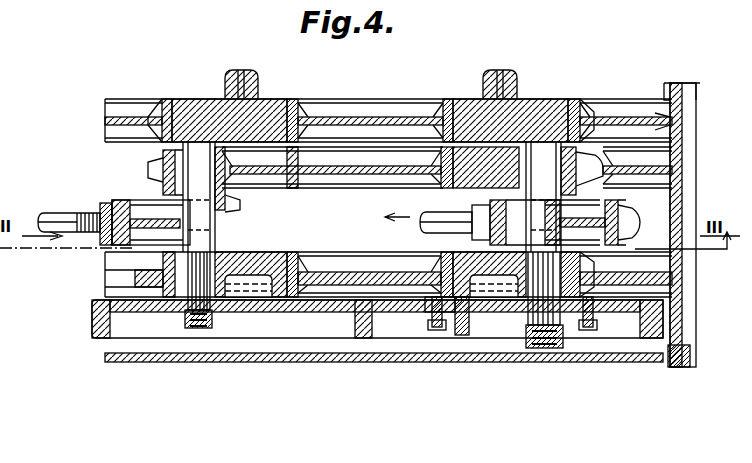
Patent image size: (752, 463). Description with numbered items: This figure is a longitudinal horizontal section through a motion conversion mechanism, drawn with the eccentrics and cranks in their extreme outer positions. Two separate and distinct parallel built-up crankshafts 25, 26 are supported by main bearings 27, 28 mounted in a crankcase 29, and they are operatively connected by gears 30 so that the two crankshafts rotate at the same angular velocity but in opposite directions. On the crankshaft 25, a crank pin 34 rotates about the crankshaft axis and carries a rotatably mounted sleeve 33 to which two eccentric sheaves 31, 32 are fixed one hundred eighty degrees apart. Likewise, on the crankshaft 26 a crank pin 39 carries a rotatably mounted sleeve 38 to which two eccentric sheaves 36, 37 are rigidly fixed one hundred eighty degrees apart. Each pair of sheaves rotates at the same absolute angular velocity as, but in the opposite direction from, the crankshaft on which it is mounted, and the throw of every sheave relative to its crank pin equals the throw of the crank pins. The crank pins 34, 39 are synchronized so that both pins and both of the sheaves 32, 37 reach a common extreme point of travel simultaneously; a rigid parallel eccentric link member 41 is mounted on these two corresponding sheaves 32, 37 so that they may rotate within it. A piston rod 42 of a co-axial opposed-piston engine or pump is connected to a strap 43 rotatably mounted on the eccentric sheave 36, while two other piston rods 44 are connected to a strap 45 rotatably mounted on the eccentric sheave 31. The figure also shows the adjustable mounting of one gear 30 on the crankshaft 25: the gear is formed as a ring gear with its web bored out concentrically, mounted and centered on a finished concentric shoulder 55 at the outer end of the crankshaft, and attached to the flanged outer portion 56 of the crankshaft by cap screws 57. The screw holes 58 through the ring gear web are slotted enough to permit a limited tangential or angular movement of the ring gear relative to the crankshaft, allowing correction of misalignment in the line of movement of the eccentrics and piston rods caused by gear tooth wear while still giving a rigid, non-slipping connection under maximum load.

The crankshaft 25 is at (538, 99).
The crankshaft 26 is at (272, 110).
The main bearing 27 is at (586, 99).
The main bearing 28 is at (170, 99).
The crankcase 29 is at (366, 99).
The gear 30 is at (92, 317).
The eccentric sheave 31 is at (608, 226).
The eccentric sheave 32 is at (478, 138).
The sleeve 33 is at (565, 208).
The crank pin 34 is at (580, 165).
The eccentric sheave 36 is at (132, 214).
The eccentric sheave 37 is at (280, 186).
The sleeve 38 is at (222, 198).
The crank pin 39 is at (240, 229).
The parallel eccentric link member 41 is at (366, 178).
The piston rod 42 is at (64, 213).
The strap 43 is at (88, 204).
The piston rod 44 is at (447, 221).
The strap 45 is at (488, 216).
The concentric shoulder 55 is at (462, 336).
The flanged outer portion 56 is at (438, 300).
The cap screw 57 is at (436, 331).
The screw hole 58 is at (542, 349).